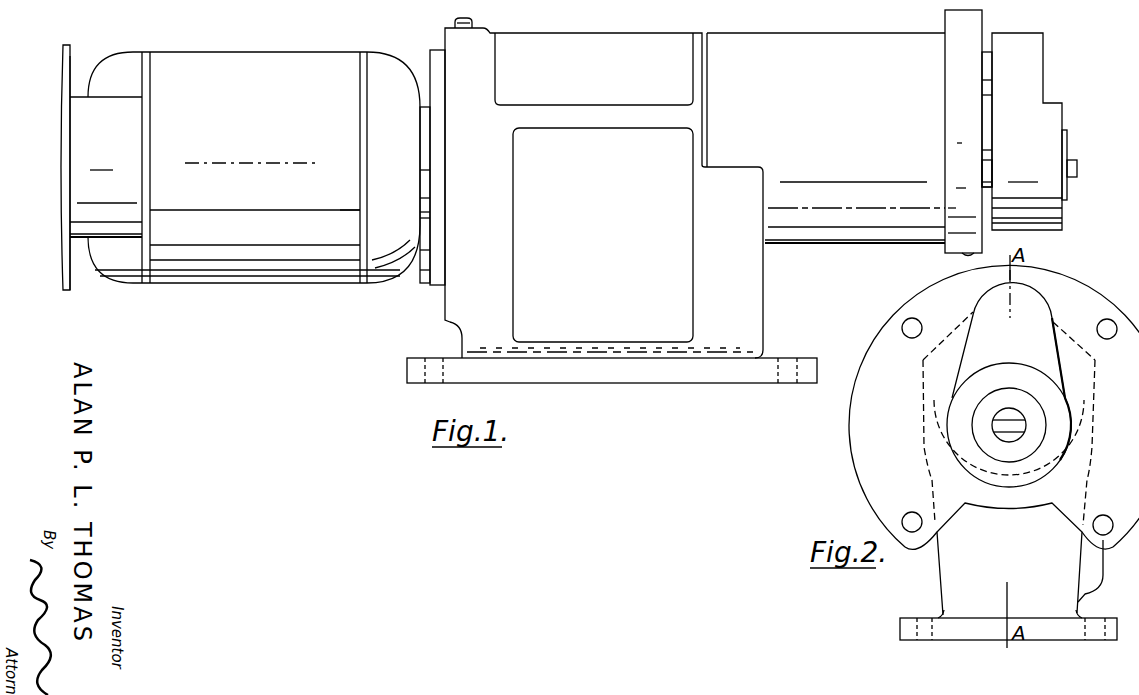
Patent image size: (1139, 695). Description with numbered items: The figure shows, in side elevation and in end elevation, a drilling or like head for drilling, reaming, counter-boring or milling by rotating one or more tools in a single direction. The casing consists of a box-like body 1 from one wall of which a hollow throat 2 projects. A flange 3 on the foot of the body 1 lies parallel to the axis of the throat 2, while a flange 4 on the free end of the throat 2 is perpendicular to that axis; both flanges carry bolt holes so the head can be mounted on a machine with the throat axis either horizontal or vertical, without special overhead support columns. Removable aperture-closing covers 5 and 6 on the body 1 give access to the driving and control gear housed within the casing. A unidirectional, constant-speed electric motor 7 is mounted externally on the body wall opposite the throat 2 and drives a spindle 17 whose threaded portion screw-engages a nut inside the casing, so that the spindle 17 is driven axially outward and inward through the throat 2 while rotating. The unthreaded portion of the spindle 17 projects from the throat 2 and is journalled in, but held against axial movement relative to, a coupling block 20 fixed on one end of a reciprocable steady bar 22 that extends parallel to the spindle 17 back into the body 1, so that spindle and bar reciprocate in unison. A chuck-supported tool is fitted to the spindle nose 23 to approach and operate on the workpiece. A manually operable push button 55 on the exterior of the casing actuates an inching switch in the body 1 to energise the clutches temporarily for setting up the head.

In FIG. 1, the box-like body 1 is at (745, 307).
In FIG. 2, the box-like body 1 is at (946, 568).
In FIG. 1, the hollow throat 2 is at (855, 233).
In FIG. 2, the hollow throat 2 is at (992, 500).
In FIG. 1, the flange 3 is at (600, 368).
In FIG. 2, the flange 3 is at (921, 620).
In FIG. 1, the flange 4 is at (953, 199).
In FIG. 1, the cover 5 is at (603, 235).
In FIG. 1, the cover 6 is at (594, 69).
In FIG. 1, the electric motor 7 is at (248, 265).
In FIG. 1, the spindle 17 is at (982, 170).
In FIG. 2, the spindle 17 is at (1011, 440).
In FIG. 1, the coupling block 20 is at (1045, 65).
In FIG. 2, the coupling block 20 is at (1045, 330).
In FIG. 1, the steady bar 22 is at (988, 65).
In FIG. 1, the spindle nose 23 is at (1078, 170).
In FIG. 2, the spindle nose 23 is at (1009, 415).
In FIG. 1, the push button 55 is at (467, 30).